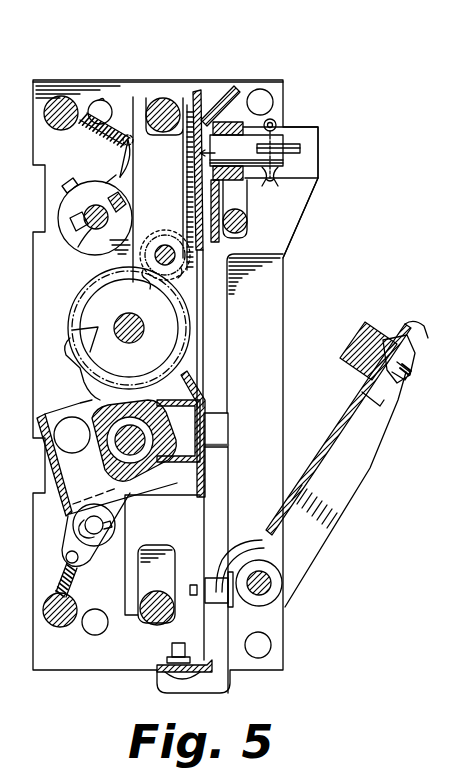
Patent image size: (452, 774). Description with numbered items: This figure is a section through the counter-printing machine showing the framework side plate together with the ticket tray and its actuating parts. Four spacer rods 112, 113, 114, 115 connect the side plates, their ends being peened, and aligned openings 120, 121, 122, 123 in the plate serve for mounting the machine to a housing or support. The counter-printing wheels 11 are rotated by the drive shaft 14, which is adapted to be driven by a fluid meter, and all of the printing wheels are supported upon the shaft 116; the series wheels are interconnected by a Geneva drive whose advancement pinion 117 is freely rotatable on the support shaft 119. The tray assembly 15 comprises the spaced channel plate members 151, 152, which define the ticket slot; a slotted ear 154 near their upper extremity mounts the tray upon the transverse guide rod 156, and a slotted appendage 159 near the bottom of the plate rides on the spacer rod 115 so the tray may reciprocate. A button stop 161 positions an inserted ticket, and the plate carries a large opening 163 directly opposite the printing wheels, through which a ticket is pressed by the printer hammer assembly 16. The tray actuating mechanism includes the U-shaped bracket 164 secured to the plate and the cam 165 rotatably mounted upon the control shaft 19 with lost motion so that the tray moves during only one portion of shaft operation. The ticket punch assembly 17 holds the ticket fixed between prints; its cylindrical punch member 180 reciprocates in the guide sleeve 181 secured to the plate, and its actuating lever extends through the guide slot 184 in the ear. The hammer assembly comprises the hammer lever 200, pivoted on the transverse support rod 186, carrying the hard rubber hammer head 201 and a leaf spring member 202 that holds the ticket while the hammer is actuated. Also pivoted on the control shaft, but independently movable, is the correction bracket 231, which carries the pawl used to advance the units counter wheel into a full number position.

The counter-printing wheels 11 is at (100, 304).
The drive shaft 14 is at (78, 248).
The tray assembly 15 is at (299, 239).
The printer hammer assembly 16 is at (391, 447).
The ticket punch assembly 17 is at (299, 169).
The control shaft 19 is at (131, 425).
The spacer rod 112 is at (44, 118).
The spacer rod 113 is at (163, 98).
The spacer rod 114 is at (43, 610).
The spacer rod 115 is at (155, 626).
The shaft 116 is at (143, 312).
The advancement pinion 117 is at (180, 235).
The support shaft 119 is at (165, 245).
The opening 120 is at (100, 100).
The opening 121 is at (267, 101).
The opening 122 is at (92, 632).
The opening 123 is at (271, 645).
The channel plate member 151 is at (226, 100).
The channel plate member 152 is at (199, 92).
The slotted ear 154 is at (302, 214).
The guide rod 156 is at (238, 232).
The slotted appendage 159 is at (162, 555).
The button stop 161 is at (218, 604).
The opening 163 is at (203, 345).
The U-shaped bracket 164 is at (184, 398).
The cam 165 is at (110, 474).
The punch member 180 is at (246, 150).
The guide sleeve 181 is at (244, 178).
The guide slot 184 is at (296, 148).
The support rod 186 is at (272, 590).
The hammer lever 200 is at (360, 492).
The hammer head 201 is at (368, 336).
The leaf spring member 202 is at (225, 545).
The correction bracket 231 is at (68, 492).